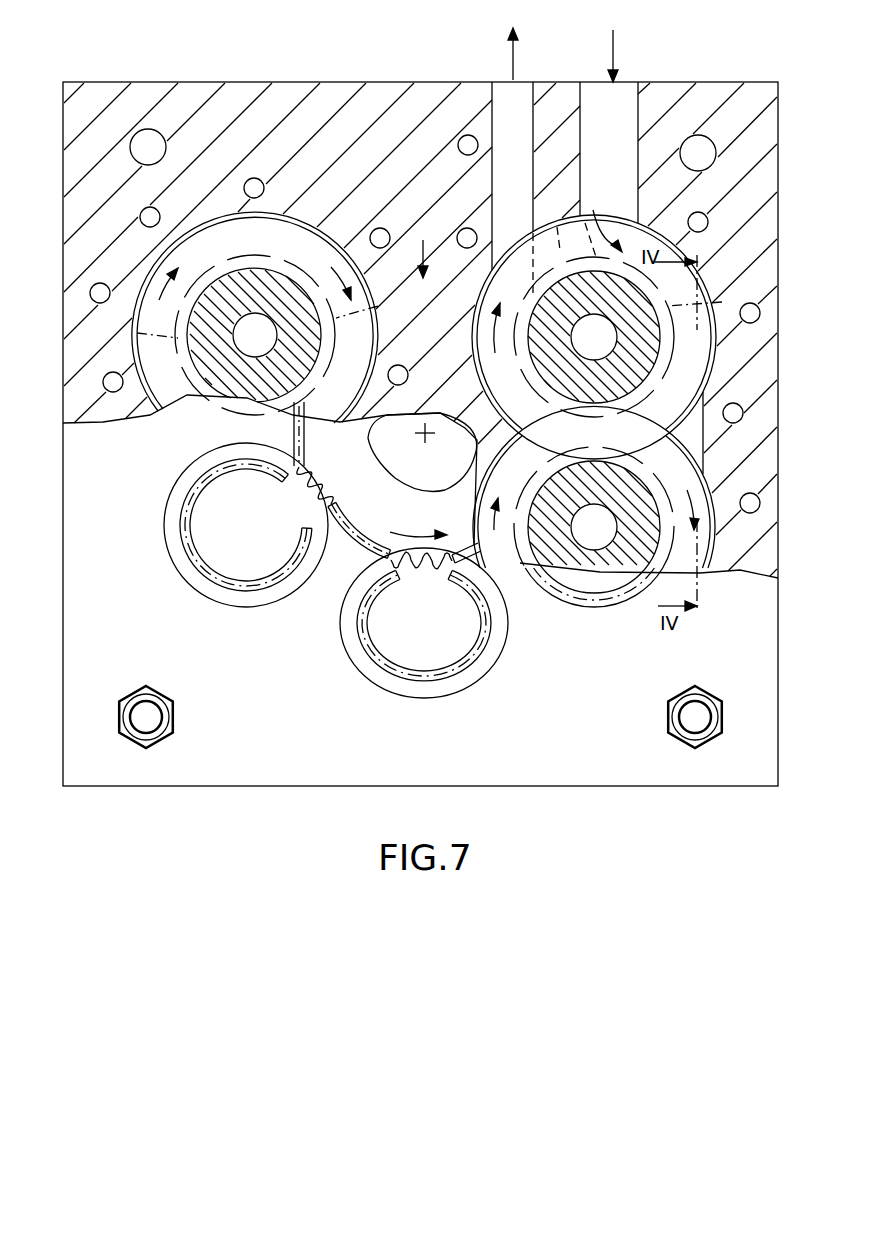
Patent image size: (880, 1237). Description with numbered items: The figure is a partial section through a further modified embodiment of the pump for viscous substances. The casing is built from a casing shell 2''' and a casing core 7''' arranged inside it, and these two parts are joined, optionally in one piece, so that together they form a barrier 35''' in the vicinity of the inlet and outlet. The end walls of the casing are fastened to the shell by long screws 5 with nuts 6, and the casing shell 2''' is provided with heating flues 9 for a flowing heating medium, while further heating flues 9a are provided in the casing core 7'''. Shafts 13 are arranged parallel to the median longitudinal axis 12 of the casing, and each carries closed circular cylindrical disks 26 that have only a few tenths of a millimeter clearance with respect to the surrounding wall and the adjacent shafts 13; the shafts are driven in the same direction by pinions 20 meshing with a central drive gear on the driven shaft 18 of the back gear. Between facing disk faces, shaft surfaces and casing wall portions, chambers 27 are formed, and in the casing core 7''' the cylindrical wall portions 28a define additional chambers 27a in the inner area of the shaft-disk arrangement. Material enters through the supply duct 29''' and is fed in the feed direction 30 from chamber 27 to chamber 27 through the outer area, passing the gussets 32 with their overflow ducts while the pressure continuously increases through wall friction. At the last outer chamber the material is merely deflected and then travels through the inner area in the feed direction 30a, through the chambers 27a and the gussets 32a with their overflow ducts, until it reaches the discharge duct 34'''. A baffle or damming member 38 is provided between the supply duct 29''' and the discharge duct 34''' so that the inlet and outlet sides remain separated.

The casing shell 2''' is at (420, 414).
The barrier 35''' is at (430, 140).
The feed direction 30a is at (340, 278).
The feed direction 30 is at (52, 267).
The discharge duct 34''' is at (530, 155).
The supply duct 29''' is at (629, 131).
The heating flues 9 is at (140, 215).
The heating flues 9a is at (477, 235).
The baffle or damming member 38 is at (546, 232).
The disks 26 is at (264, 247).
The chambers 27 is at (137, 333).
The chambers 27a is at (378, 306).
The cylindrical wall portions 28a is at (468, 336).
The gussets 32a is at (357, 410).
The shafts 13 is at (246, 380).
The casing core 7''' is at (389, 438).
The median longitudinal axis 12 is at (429, 437).
The driven shaft 18 is at (436, 481).
The gussets 32 is at (690, 441).
The pinions 20 is at (243, 606).
The screws 5 is at (145, 717).
The nuts 6 is at (172, 728).